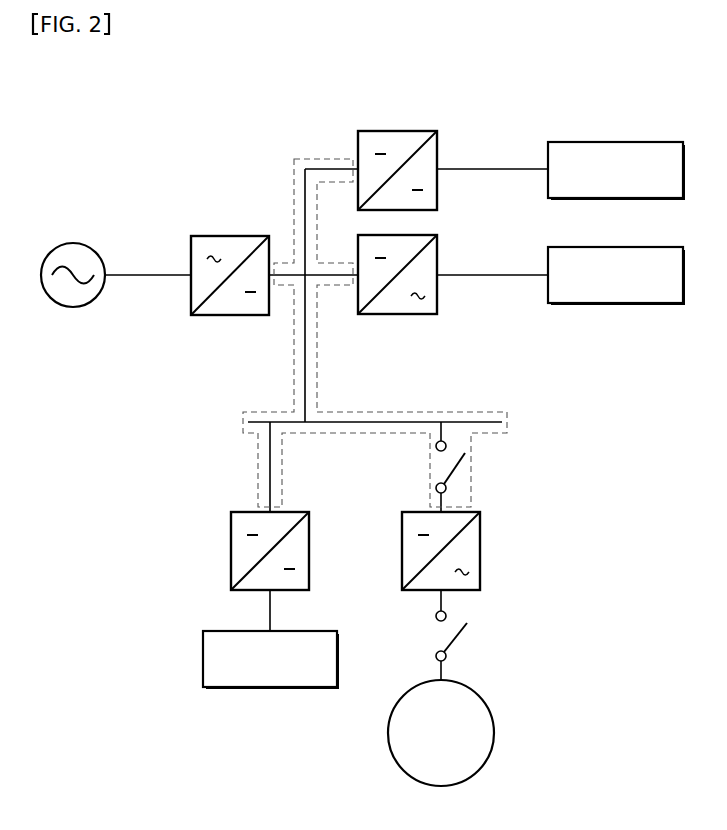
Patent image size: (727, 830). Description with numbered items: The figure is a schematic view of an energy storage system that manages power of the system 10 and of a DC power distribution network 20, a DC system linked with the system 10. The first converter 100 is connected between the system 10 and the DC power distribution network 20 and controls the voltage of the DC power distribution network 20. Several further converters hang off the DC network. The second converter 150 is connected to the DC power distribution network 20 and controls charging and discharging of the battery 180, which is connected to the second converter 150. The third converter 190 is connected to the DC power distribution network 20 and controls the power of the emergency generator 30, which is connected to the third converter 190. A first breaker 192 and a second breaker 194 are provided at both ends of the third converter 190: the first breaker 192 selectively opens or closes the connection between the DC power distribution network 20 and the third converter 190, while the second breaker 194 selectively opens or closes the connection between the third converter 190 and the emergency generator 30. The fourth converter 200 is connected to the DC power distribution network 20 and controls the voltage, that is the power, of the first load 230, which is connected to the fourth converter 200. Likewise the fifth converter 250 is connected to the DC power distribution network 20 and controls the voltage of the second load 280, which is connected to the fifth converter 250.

The system 10 is at (73, 242).
The DC power distribution network 20 is at (311, 159).
The emergency generator 30 is at (495, 731).
The first converter 100 is at (231, 236).
The second converter 150 is at (231, 549).
The battery 180 is at (203, 659).
The third converter 190 is at (480, 550).
The first breaker 192 is at (457, 470).
The second breaker 194 is at (457, 638).
The fourth converter 200 is at (397, 315).
The first load 230 is at (618, 304).
The fifth converter 250 is at (398, 131).
The second load 280 is at (617, 142).